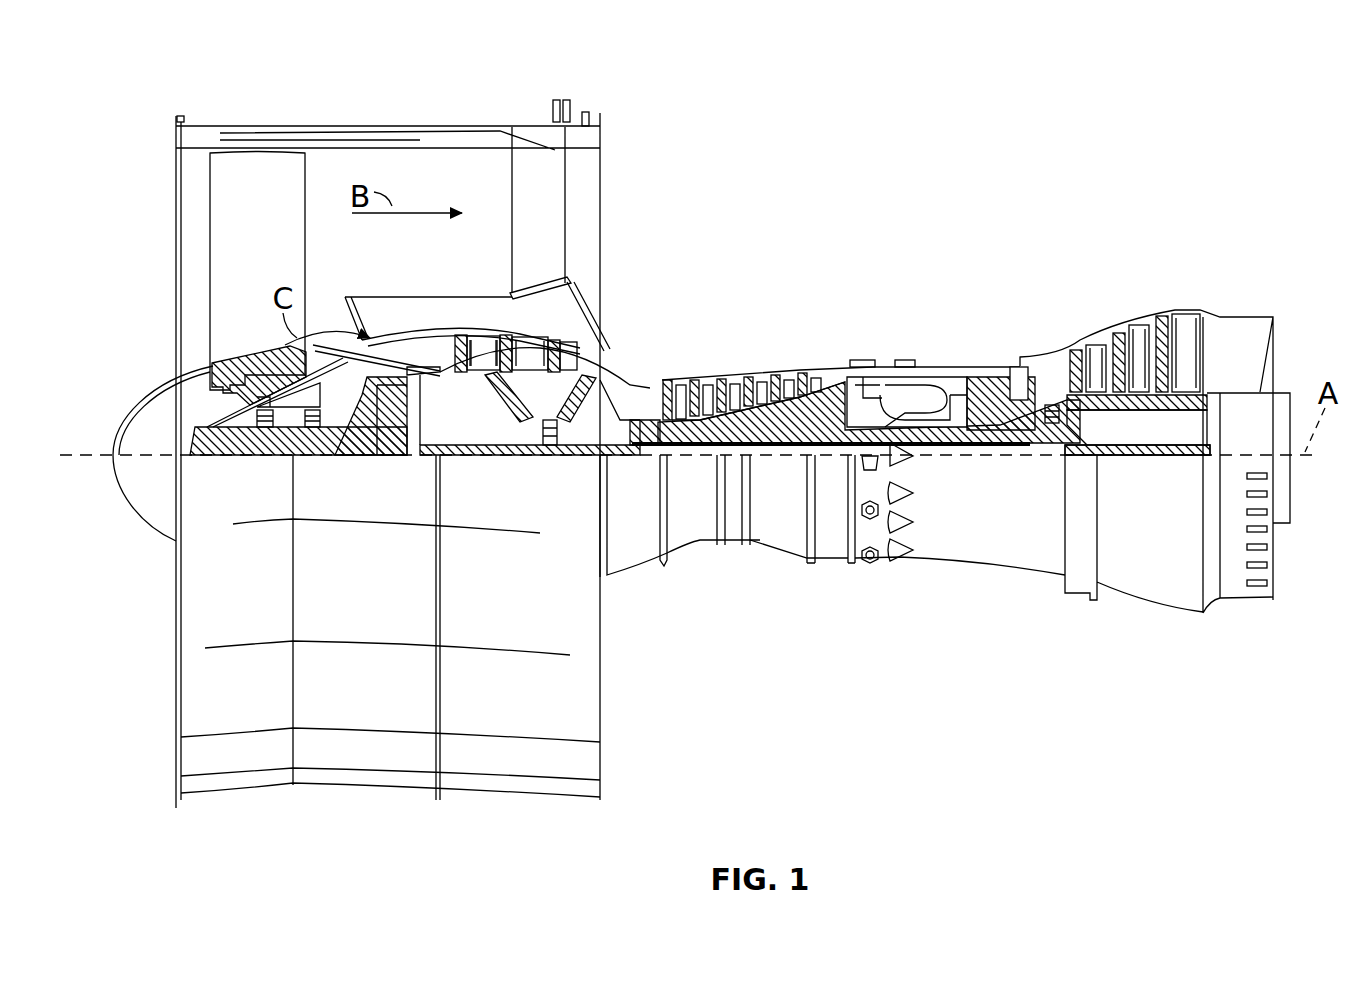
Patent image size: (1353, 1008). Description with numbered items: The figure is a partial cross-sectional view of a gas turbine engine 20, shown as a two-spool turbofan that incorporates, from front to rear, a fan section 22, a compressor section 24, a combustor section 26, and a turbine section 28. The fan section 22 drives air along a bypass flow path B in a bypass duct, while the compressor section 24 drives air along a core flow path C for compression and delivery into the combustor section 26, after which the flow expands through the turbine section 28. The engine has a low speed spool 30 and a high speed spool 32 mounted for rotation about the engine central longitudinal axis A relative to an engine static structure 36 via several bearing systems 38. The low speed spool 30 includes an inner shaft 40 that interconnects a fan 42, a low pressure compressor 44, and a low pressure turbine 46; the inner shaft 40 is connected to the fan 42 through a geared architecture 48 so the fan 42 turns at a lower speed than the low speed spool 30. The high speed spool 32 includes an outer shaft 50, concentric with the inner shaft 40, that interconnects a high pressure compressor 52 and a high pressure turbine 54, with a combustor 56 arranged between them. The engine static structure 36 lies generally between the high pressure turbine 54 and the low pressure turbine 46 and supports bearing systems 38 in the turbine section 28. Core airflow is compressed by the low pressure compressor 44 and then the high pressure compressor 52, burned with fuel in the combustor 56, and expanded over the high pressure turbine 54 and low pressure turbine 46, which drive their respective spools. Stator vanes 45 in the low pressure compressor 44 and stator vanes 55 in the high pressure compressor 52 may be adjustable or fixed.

The gas turbine engine 20 is at (1118, 142).
The fan section 22 is at (268, 106).
The compressor section 24 is at (737, 270).
The combustor section 26 is at (950, 330).
The turbine section 28 is at (1055, 315).
The low speed spool 30 is at (793, 462).
The high speed spool 32 is at (847, 415).
The engine static structure 36 is at (828, 567).
The bearing systems 38 is at (263, 425).
The inner shaft 40 is at (620, 458).
The fan 42 is at (234, 266).
The low pressure compressor 44 is at (523, 343).
The stator vanes 45 is at (487, 332).
The low pressure turbine 46 is at (1150, 338).
The geared architecture 48 is at (385, 430).
The outer shaft 50 is at (943, 437).
The high pressure compressor 52 is at (733, 415).
The high pressure turbine 54 is at (993, 370).
The stator vanes 55 is at (677, 388).
The combustor 56 is at (907, 385).